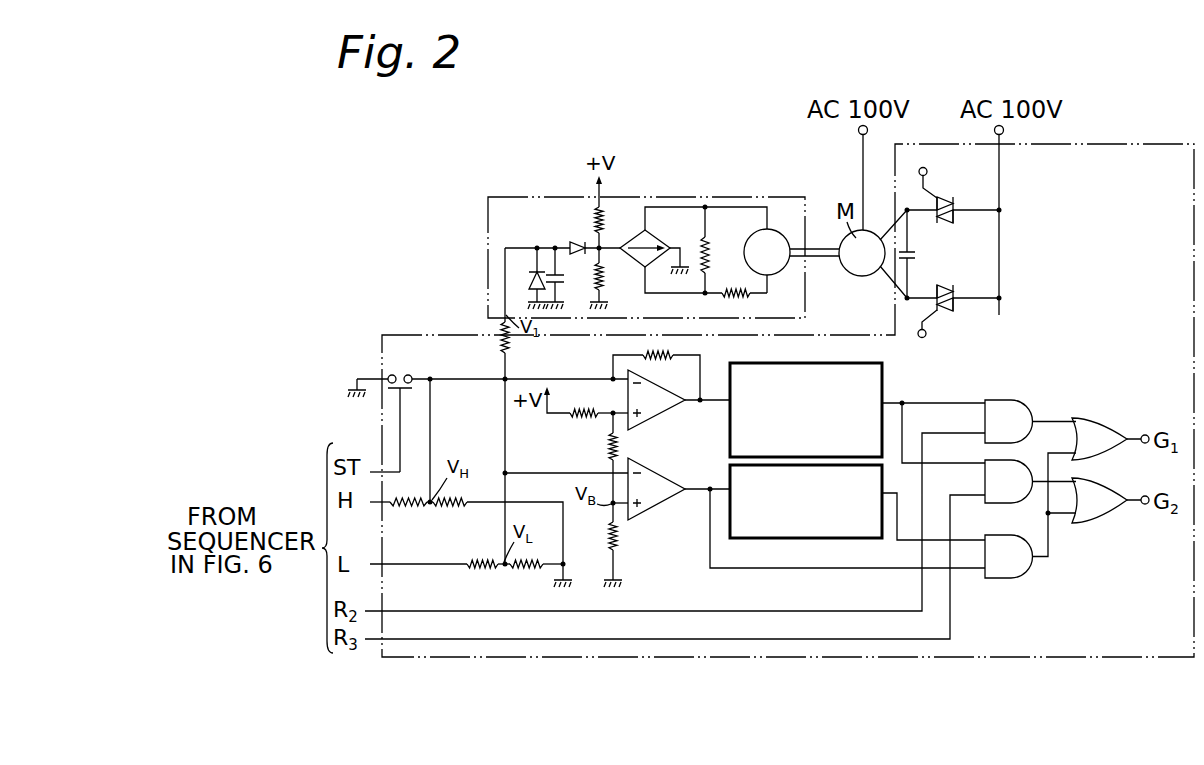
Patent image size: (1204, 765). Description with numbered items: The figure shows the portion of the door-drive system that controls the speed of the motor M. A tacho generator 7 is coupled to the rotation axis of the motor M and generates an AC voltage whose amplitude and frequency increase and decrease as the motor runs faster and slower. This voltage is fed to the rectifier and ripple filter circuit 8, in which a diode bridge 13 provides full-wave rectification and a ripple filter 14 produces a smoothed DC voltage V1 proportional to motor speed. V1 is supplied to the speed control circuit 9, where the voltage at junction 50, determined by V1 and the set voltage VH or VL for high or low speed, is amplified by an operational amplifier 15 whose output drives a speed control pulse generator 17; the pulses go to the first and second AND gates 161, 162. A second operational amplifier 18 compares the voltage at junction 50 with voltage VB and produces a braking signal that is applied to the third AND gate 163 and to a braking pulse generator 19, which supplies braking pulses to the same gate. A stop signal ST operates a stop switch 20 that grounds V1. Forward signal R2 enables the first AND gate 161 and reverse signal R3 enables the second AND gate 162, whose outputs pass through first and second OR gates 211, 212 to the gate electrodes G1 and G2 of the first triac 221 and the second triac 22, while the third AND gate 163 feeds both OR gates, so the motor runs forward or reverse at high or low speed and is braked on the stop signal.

The tacho generator 7 is at (775, 232).
The rectifier and ripple filter circuit 8 is at (486, 211).
The speed control circuit 9 is at (410, 333).
The diode bridge 13 is at (601, 250).
The ripple filter 14 is at (533, 277).
The operational amplifier 15 is at (654, 416).
The speed control pulse generator 17 is at (884, 385).
The operational amplifier 18 is at (654, 512).
The braking pulse generator 19 is at (826, 538).
The stop switch 20 is at (405, 375).
The junction 50 is at (503, 382).
The first AND gate 161 is at (1022, 400).
The second AND gate 162 is at (1021, 460).
The third AND gate 163 is at (1003, 522).
The first OR gate 211 is at (1110, 420).
The second OR gate 212 is at (1118, 481).
The second triac 22 is at (948, 286).
The first triac 221 is at (950, 198).